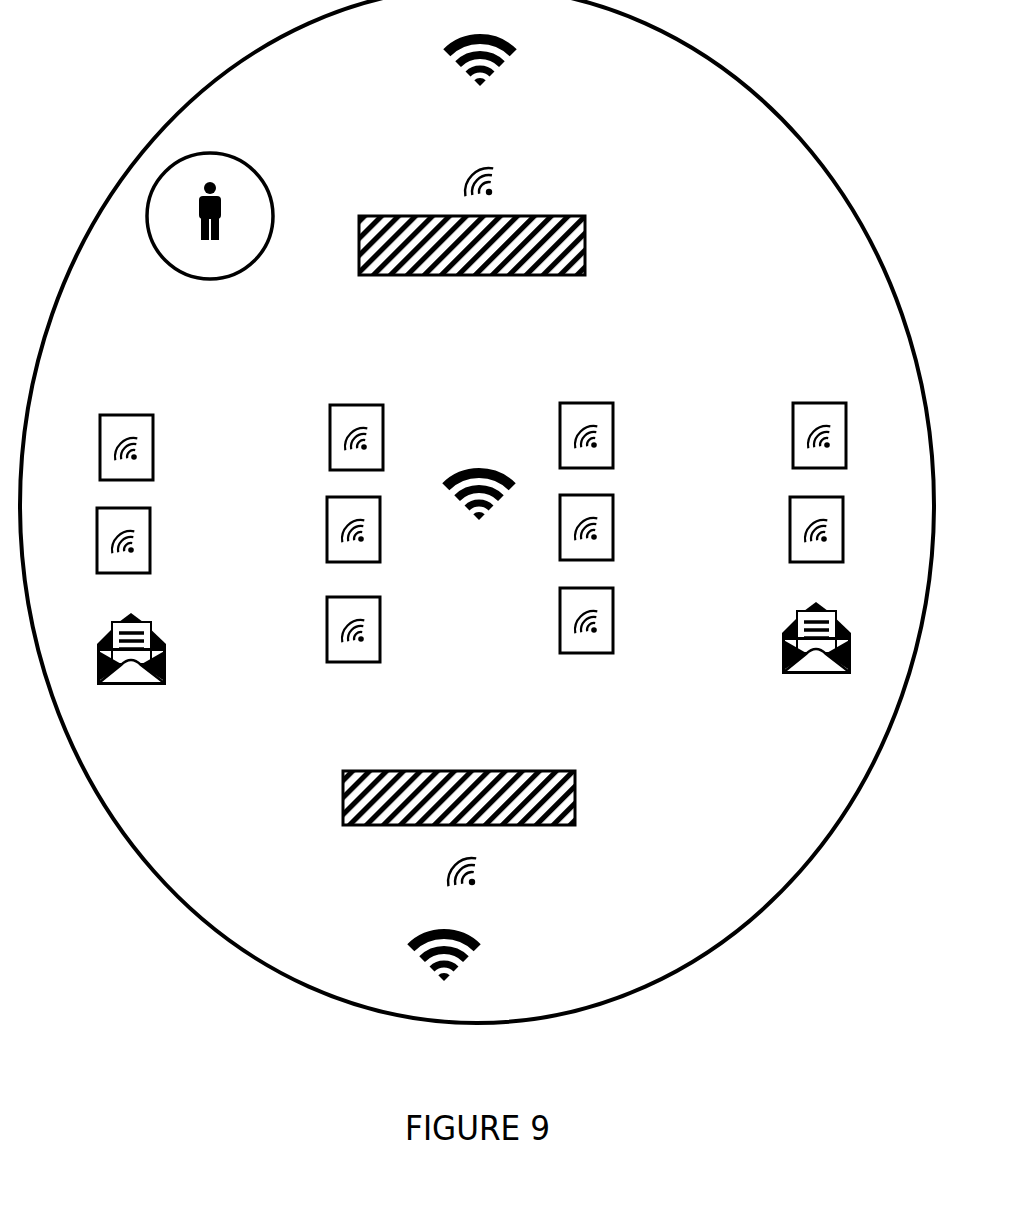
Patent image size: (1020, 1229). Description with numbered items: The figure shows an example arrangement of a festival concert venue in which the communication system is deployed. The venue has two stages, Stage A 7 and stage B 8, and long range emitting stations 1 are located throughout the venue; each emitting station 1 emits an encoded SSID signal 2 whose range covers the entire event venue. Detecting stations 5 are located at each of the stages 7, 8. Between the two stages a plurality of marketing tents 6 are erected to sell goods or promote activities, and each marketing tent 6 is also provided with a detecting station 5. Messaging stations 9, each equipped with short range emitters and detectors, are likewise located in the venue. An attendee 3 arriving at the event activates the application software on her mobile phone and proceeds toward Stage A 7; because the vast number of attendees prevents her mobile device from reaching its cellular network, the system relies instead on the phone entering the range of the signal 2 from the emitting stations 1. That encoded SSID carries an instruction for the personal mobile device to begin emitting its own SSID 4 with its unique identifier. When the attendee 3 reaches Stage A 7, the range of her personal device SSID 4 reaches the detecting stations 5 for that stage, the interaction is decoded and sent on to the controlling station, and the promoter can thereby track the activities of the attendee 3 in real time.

The emitting station 1 is at (453, 62).
The signal 2 is at (180, 107).
The attendee 3 is at (222, 205).
The SSID of personal mobile device 4 is at (275, 212).
The detecting station 5 is at (497, 176).
The marketing tent 6 is at (333, 432).
The Stage A 7 is at (585, 236).
The stage B 8 is at (575, 797).
The messaging station 9 is at (165, 675).